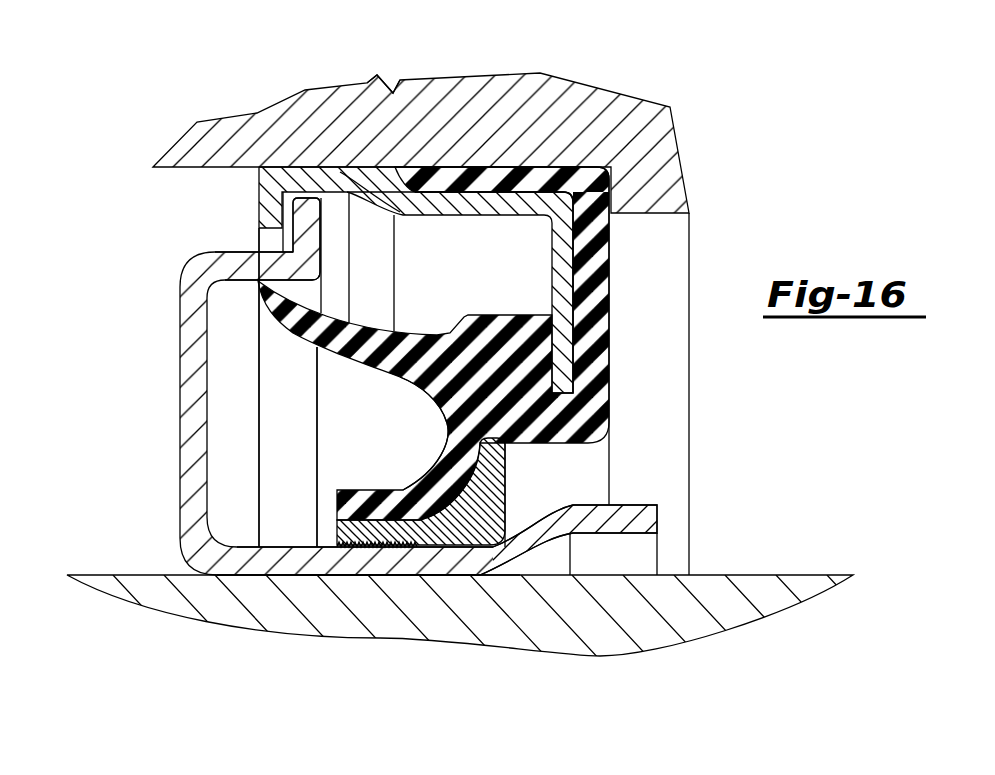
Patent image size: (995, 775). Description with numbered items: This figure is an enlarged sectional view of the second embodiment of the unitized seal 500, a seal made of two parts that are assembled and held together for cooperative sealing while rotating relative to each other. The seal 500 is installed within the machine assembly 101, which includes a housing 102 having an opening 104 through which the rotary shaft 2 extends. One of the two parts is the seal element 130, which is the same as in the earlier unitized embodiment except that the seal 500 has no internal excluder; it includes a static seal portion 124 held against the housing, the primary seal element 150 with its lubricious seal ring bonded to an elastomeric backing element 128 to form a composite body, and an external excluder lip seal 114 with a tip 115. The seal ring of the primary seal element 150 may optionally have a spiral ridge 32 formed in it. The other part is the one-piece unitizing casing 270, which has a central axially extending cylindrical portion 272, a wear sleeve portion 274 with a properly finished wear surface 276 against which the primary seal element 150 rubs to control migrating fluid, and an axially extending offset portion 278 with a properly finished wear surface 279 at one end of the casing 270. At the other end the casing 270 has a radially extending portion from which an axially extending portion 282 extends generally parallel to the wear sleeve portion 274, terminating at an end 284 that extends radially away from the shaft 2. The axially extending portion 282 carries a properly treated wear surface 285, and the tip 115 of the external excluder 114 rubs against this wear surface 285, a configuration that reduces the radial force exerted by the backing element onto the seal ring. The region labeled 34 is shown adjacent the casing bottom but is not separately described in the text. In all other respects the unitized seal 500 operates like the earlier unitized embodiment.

The rotary shaft 2 is at (695, 617).
The spiral ridge 32 is at (407, 567).
The seal contact surface 34 is at (335, 565).
The machine assembly 101 is at (622, 117).
The housing 102 is at (250, 127).
The opening 104 is at (373, 172).
The external excluder lip seal 114 is at (365, 330).
The tip 115 is at (260, 257).
The static seal portion 124 is at (575, 181).
The elastomeric backing element 128 is at (353, 488).
The primary seal element 130 is at (390, 487).
The primary seal element 150 is at (337, 520).
The unitizing casing 270 is at (188, 418).
The central axially extending cylindrical portion 272 is at (297, 567).
The wear sleeve portion 274 is at (245, 547).
The wear surface 276 is at (383, 560).
The axially extending offset portion 278 is at (660, 520).
The wear surface 279 is at (632, 505).
The axially extending portion 282 is at (247, 257).
The end 284 is at (310, 198).
The wear surface 285 is at (250, 280).
The unitized seal 500 is at (146, 264).